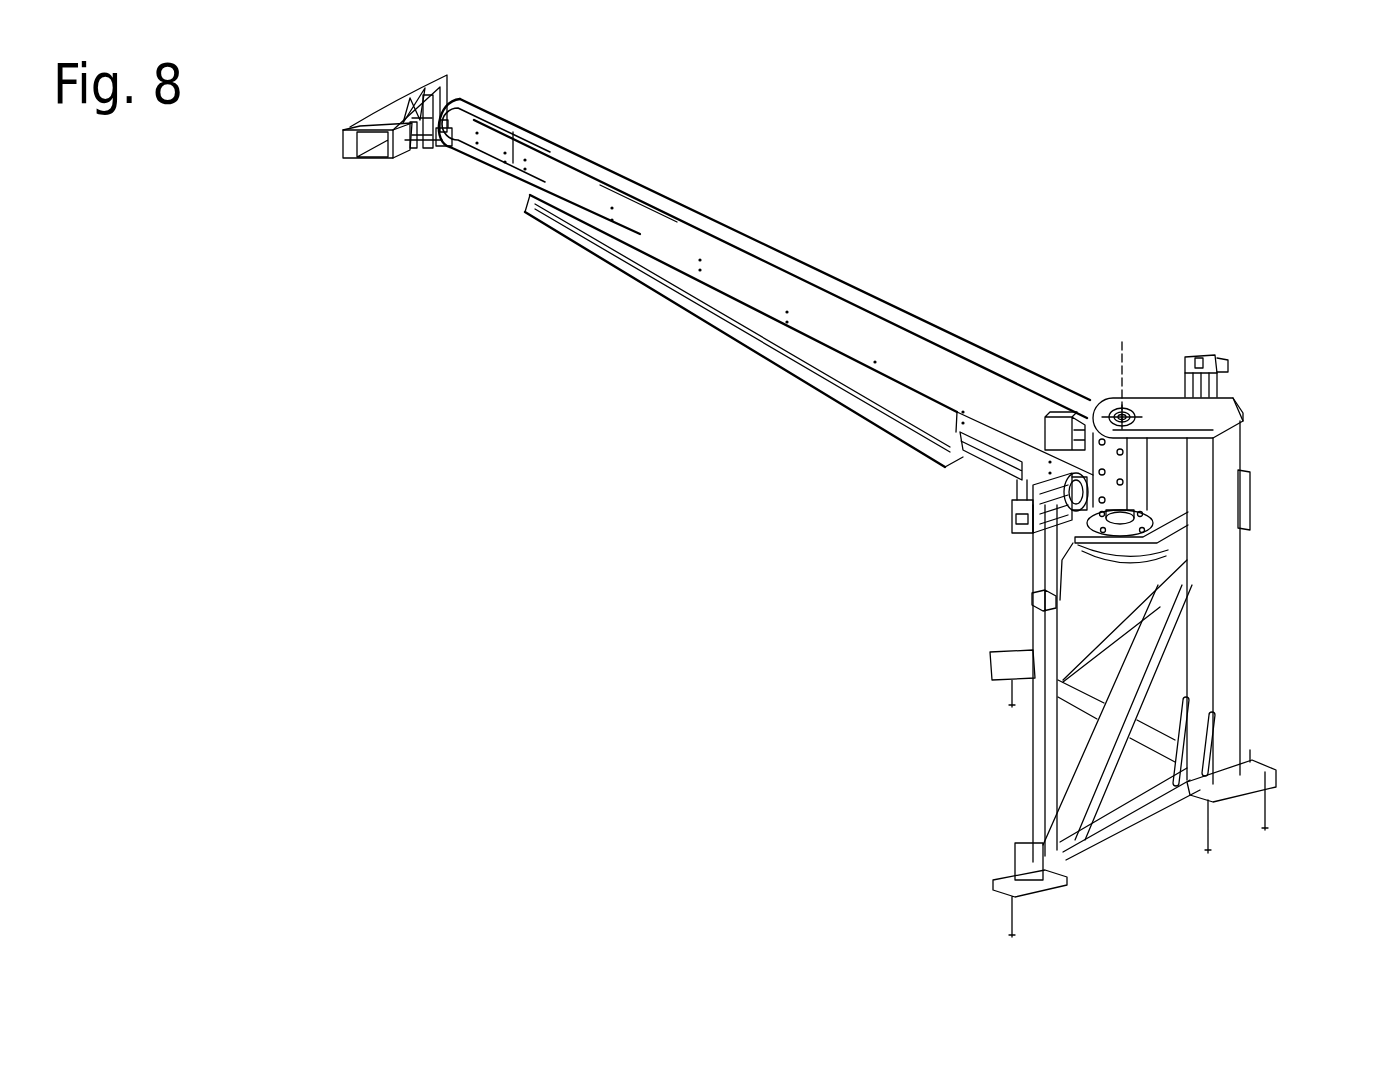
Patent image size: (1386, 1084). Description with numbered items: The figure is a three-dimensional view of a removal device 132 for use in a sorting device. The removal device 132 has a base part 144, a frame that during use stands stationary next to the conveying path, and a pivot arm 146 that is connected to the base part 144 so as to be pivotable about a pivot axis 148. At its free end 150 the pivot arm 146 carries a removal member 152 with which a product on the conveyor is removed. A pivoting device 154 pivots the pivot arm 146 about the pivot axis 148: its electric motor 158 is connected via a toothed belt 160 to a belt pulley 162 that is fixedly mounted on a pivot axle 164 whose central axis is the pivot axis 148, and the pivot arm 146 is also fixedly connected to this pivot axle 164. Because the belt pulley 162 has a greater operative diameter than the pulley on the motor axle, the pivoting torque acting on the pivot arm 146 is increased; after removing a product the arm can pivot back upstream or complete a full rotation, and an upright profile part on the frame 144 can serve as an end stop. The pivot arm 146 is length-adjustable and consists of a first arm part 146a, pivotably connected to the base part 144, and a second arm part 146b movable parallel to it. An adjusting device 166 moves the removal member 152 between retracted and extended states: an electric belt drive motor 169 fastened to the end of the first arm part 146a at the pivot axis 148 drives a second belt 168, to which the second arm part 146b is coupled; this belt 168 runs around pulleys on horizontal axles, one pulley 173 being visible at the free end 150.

The removal device 132 is at (1129, 592).
The base part 144 is at (1222, 670).
The pivot arm 146 is at (766, 299).
The first arm part 146a is at (882, 290).
The second arm part 146b is at (490, 192).
The pivot axis 148 is at (1125, 372).
The free end 150 is at (420, 166).
The removal member 152 is at (355, 170).
The pivoting device 154 is at (1088, 575).
The electric motor 158 is at (1212, 393).
The toothed belt 160 is at (1110, 572).
The belt pulley 162 is at (1083, 556).
The pivot axle 164 is at (1126, 410).
The adjusting device 166 is at (1002, 507).
The second belt 168 is at (547, 138).
The electric belt drive motor 169 is at (1012, 518).
The pulley 173 is at (445, 148).